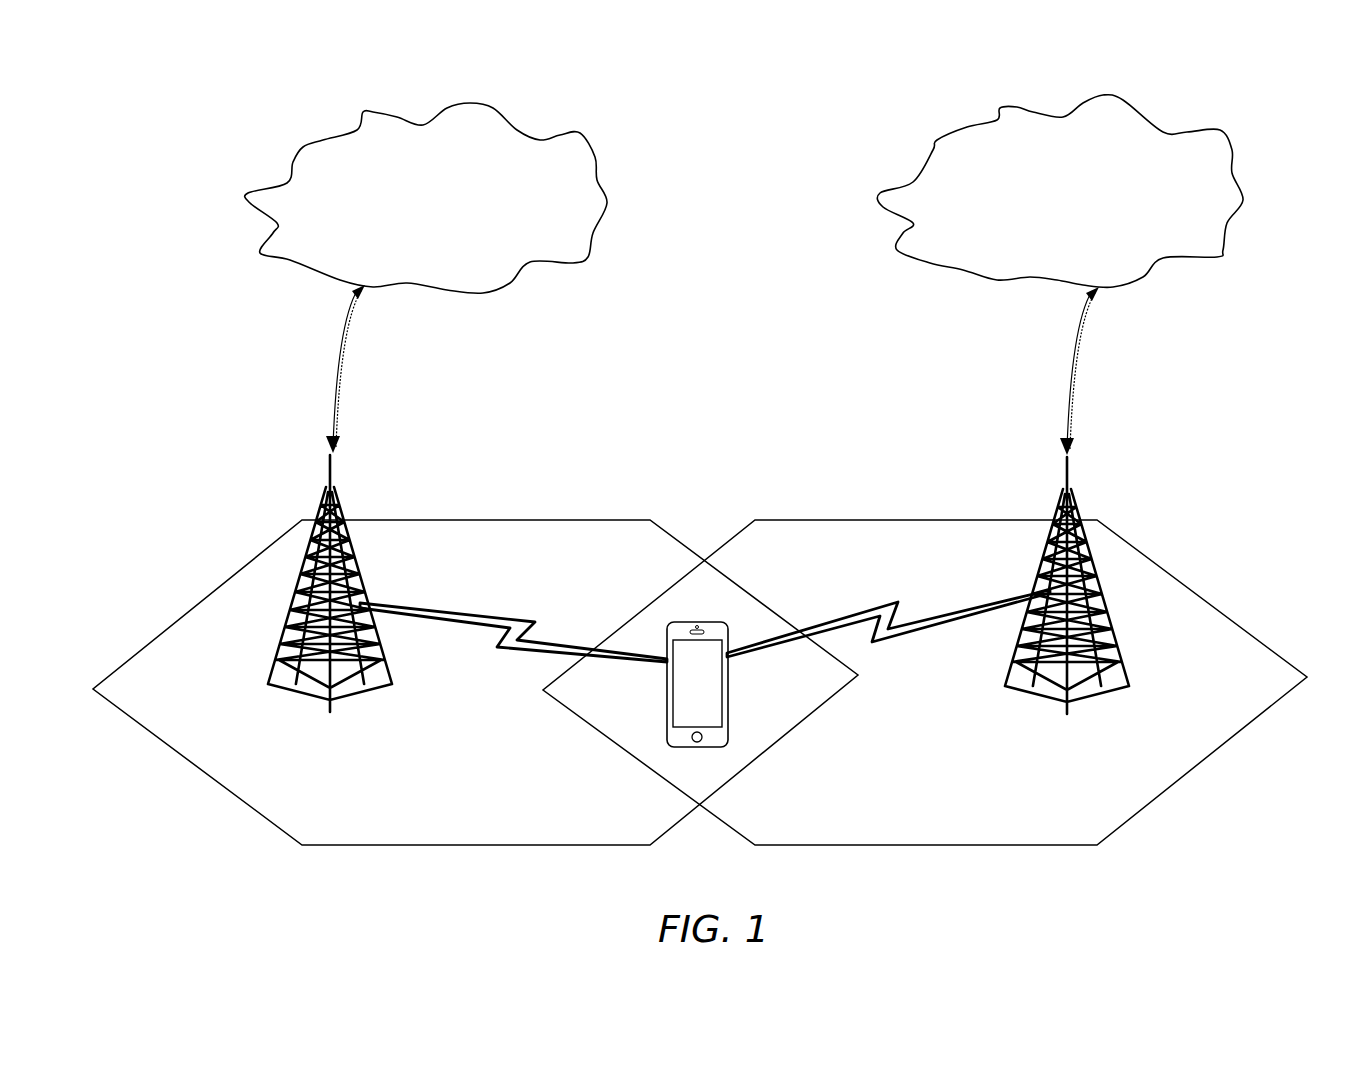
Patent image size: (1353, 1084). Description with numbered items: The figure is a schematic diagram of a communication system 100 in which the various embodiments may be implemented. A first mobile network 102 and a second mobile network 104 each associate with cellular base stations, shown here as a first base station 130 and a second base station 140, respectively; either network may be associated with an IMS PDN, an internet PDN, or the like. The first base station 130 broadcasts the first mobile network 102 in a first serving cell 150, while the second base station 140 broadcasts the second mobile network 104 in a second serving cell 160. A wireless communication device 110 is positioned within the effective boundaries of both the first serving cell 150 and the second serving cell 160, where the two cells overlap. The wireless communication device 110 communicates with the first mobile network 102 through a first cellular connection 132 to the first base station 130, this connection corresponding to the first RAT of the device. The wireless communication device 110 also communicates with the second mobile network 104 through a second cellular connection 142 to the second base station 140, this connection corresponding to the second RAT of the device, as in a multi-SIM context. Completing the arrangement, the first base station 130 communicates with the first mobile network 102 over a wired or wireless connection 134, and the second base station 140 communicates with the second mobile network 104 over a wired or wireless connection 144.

The communication system 100 is at (750, 182).
The first mobile network 102 is at (323, 140).
The second mobile network 104 is at (1033, 112).
The wireless communication device 110 is at (727, 673).
The first base station 130 is at (290, 638).
The first cellular connection 132 is at (530, 652).
The wired or wireless connection 134 is at (338, 355).
The second base station 140 is at (1112, 638).
The second cellular connection 142 is at (883, 603).
The wired or wireless connection 144 is at (1068, 360).
The first serving cell 150 is at (530, 519).
The second serving cell 160 is at (893, 518).